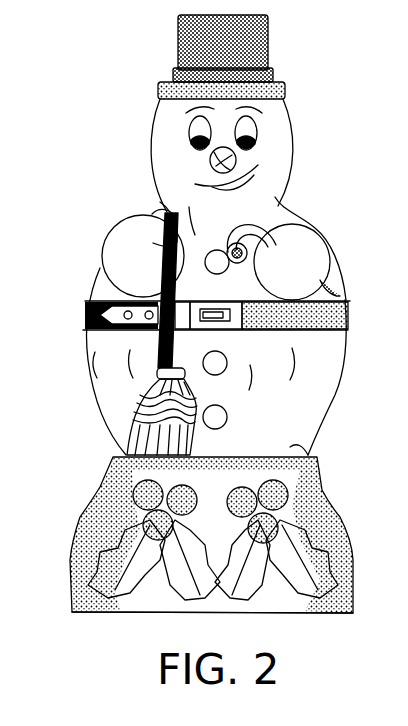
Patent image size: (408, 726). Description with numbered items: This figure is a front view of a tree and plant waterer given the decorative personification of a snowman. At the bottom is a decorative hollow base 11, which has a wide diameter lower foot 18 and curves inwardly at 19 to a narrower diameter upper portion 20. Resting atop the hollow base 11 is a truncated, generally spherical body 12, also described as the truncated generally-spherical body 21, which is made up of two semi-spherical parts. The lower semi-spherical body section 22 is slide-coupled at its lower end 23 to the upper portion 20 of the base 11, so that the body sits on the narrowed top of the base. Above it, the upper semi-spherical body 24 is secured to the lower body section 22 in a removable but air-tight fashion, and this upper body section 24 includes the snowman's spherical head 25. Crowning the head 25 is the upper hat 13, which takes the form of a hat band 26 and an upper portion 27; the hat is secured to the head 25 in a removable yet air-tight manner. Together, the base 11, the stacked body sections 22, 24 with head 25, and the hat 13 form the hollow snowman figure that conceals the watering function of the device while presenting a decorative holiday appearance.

The decorative hollow base 11 is at (328, 500).
The truncated spherical body 12 is at (85, 345).
The upper hat 13 is at (158, 91).
The lower foot 18 is at (76, 610).
The inwardly curving portion 19 is at (100, 508).
The upper portion 20 is at (113, 456).
The truncated generally-spherical body 21 is at (350, 326).
The lower semi-spherical body section 22 is at (323, 386).
The lower end 23 is at (292, 447).
The upper semi-spherical body 24 is at (102, 272).
The spherical head 25 is at (293, 158).
The hat band 26 is at (273, 72).
The upper portion 27 is at (178, 45).